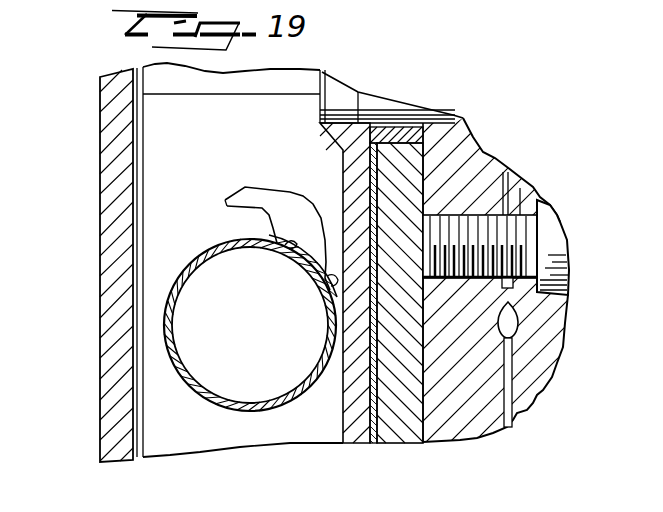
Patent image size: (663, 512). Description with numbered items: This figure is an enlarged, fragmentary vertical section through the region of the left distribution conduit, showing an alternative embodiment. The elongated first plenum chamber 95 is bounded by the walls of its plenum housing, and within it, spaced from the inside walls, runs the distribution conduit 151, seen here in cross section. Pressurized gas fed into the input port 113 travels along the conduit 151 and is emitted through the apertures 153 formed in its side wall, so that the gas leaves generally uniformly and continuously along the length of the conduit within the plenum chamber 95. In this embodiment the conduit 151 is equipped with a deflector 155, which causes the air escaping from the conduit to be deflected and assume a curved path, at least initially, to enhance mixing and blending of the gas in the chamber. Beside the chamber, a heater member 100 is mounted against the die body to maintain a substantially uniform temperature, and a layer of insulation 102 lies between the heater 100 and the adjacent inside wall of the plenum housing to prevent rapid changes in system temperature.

The first plenum chamber 95 is at (162, 163).
The heater member 100 is at (393, 433).
The insulation layer 102 is at (372, 177).
The input port 113 is at (268, 388).
The distribution conduit 151 is at (165, 303).
The apertures 153 is at (252, 250).
The deflector 155 is at (293, 206).